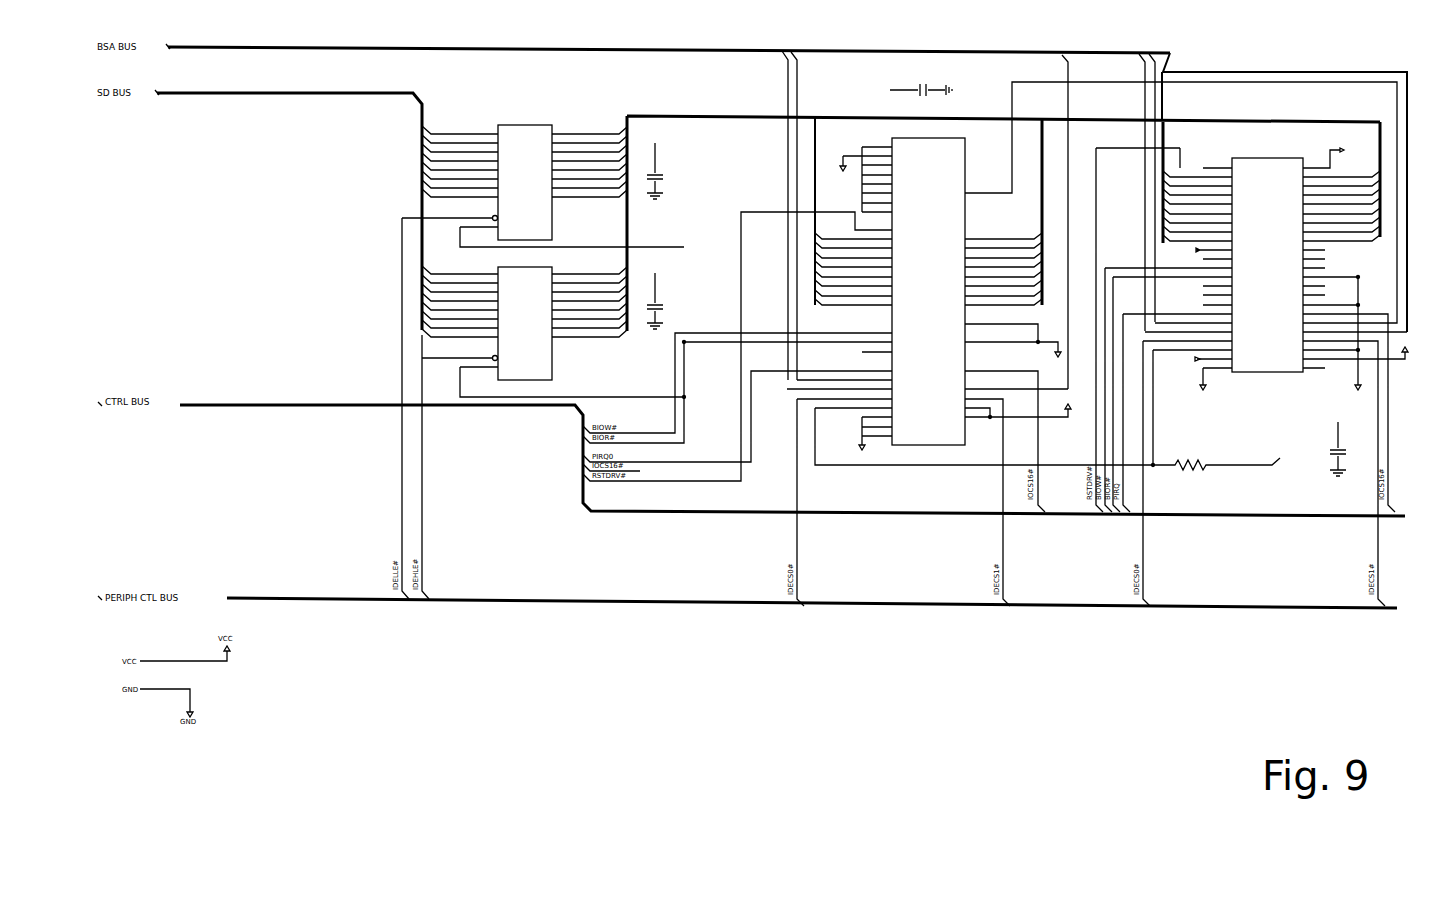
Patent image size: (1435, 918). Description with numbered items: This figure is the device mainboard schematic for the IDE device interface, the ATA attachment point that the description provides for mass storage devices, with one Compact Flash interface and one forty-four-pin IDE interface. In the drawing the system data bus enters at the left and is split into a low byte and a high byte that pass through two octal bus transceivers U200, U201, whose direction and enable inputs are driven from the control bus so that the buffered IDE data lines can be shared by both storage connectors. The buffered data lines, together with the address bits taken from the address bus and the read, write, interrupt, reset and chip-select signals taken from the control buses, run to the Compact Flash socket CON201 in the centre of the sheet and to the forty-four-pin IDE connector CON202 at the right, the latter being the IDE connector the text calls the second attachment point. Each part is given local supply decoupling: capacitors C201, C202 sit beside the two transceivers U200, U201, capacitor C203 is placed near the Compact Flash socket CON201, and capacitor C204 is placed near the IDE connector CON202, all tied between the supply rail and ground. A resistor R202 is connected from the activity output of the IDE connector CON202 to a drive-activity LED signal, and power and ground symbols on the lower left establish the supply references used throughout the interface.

The 74ACT245 bus transceiver (low byte) U200 is at (543, 180).
The 74ACT245 bus transceiver (high byte) U201 is at (553, 326).
The Compact Flash connector CON201 is at (1092, 344).
The IDE connector CON202 is at (1253, 376).
The 0.1uF decoupling capacitor C201 is at (665, 167).
The 0.1uF decoupling capacitor C202 is at (665, 297).
The 0.1uF decoupling capacitor C203 is at (910, 89).
The 0.1uF decoupling capacitor C204 is at (1349, 445).
The 1K resistor R202 is at (1216, 465).